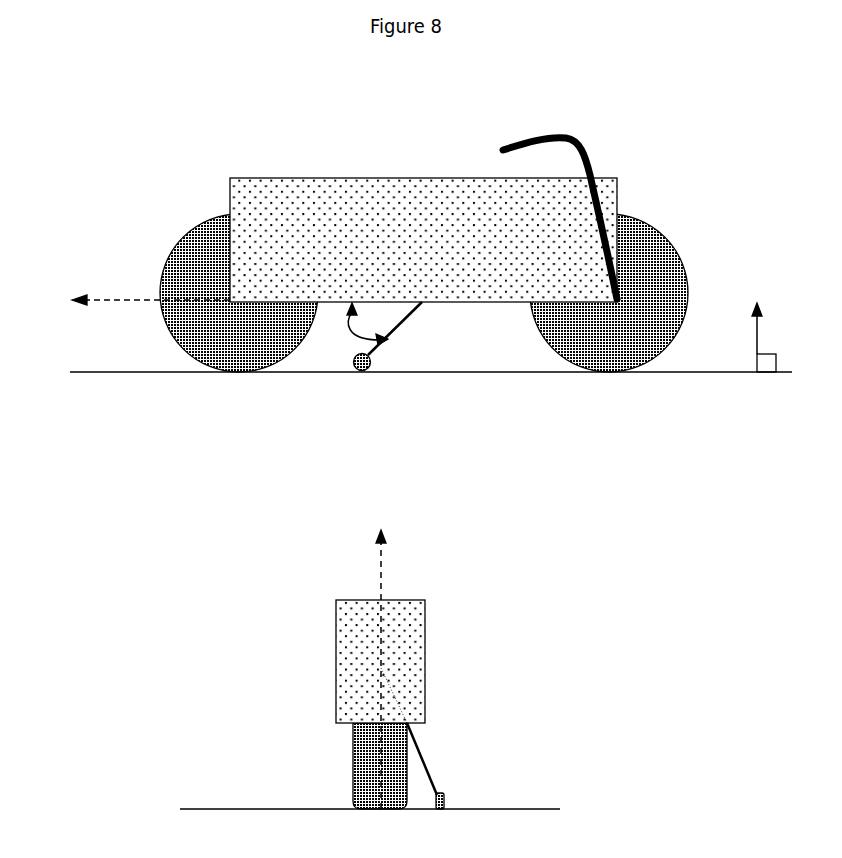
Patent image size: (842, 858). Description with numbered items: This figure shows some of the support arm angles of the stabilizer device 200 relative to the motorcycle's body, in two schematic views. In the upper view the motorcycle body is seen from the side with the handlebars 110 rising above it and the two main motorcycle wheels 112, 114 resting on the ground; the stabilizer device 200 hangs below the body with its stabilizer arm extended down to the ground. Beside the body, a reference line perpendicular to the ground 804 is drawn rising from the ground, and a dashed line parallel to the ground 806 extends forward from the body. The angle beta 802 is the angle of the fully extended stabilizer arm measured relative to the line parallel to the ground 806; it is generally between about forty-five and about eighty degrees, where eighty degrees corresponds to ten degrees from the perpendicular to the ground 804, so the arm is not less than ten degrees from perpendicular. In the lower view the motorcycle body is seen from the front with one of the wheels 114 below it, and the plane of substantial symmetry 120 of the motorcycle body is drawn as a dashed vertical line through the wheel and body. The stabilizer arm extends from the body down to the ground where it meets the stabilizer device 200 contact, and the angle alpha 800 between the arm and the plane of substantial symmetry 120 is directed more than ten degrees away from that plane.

The handlebars 110 is at (547, 132).
The main motorcycle wheel 112 is at (700, 275).
The main motorcycle wheel 114 is at (145, 267).
The plane of substantial symmetry 120 is at (385, 567).
The stabilizer device 200 is at (382, 358).
The angle alpha 800 is at (427, 767).
The angle beta 802 is at (348, 328).
The perpendicular to the ground 804 is at (768, 327).
The line parallel to the ground 806 is at (106, 303).